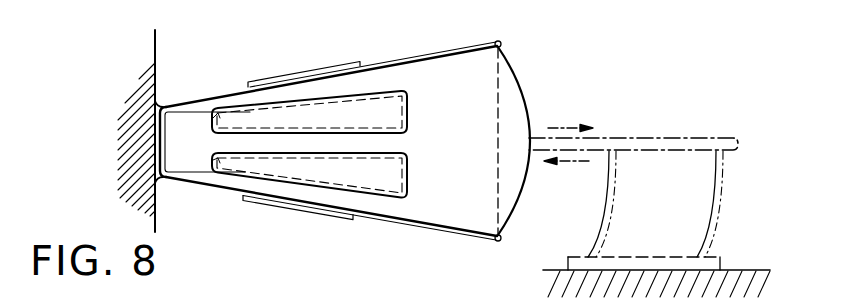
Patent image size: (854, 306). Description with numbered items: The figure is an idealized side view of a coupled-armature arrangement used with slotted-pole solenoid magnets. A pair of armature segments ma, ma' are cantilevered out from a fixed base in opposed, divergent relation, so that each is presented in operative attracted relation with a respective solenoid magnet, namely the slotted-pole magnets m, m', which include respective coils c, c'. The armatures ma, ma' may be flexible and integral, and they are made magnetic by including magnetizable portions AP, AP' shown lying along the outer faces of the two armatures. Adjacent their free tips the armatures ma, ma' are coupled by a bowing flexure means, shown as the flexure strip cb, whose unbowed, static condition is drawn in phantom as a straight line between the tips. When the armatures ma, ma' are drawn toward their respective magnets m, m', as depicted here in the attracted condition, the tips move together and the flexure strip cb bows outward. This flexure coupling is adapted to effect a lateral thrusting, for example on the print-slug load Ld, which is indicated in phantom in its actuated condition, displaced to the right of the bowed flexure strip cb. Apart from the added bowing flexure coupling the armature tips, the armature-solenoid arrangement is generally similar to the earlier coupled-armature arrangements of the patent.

The magnetizable portion AP is at (301, 61).
The magnetizable portion AP' is at (298, 226).
The armature segment ma is at (342, 58).
The armature segment ma' is at (333, 233).
The slotted-pole magnet m is at (331, 112).
The slotted-pole magnet m' is at (332, 175).
The coil c is at (197, 125).
The coil c' is at (198, 152).
The flexure strip cb is at (527, 110).
The print-slug load Ld is at (670, 134).